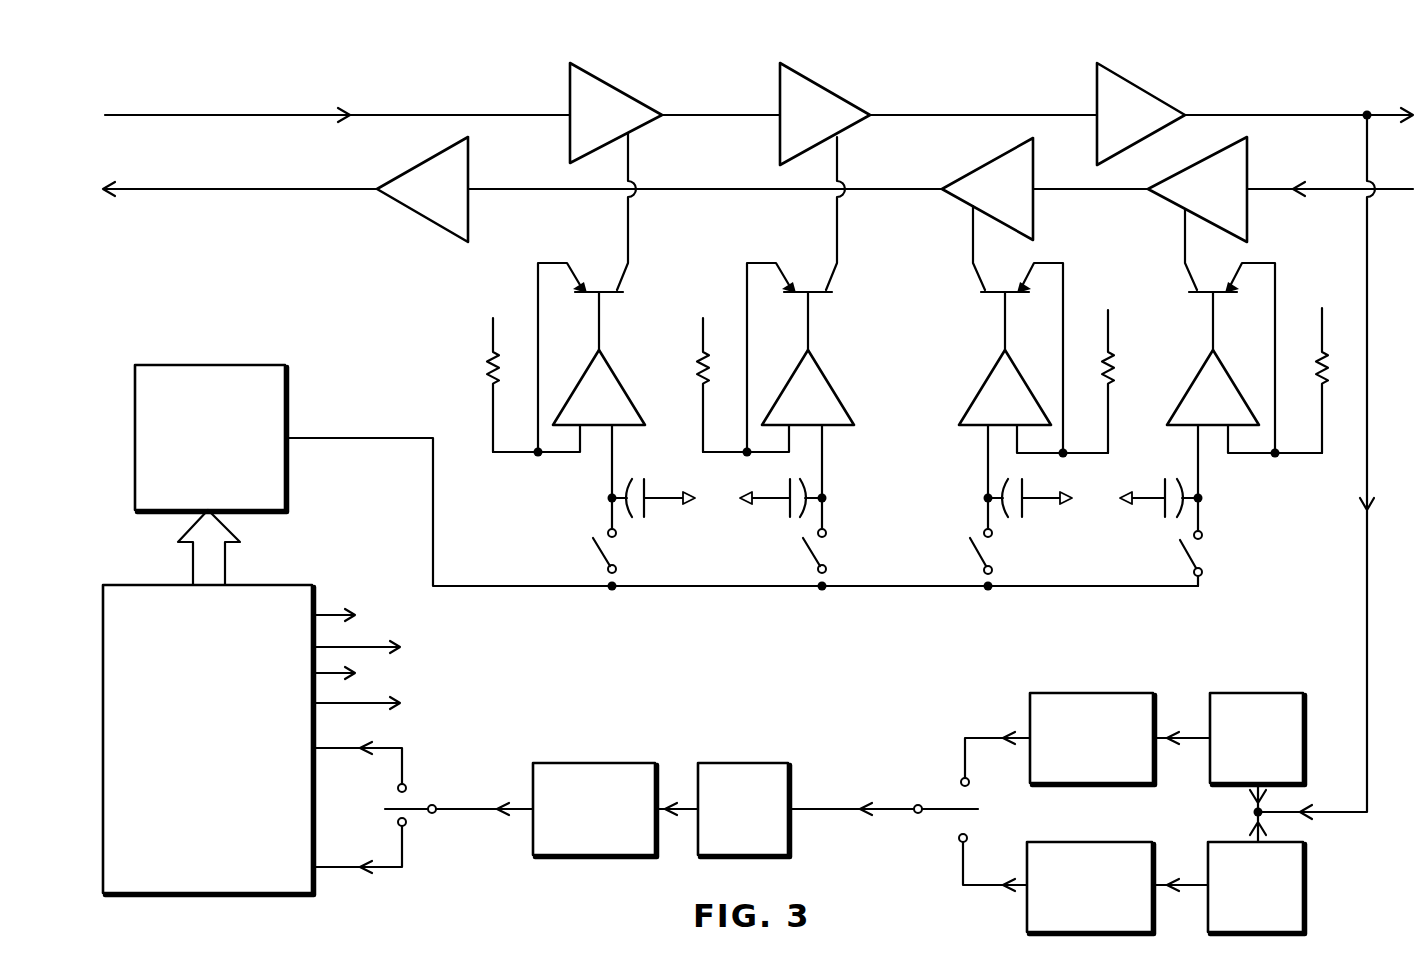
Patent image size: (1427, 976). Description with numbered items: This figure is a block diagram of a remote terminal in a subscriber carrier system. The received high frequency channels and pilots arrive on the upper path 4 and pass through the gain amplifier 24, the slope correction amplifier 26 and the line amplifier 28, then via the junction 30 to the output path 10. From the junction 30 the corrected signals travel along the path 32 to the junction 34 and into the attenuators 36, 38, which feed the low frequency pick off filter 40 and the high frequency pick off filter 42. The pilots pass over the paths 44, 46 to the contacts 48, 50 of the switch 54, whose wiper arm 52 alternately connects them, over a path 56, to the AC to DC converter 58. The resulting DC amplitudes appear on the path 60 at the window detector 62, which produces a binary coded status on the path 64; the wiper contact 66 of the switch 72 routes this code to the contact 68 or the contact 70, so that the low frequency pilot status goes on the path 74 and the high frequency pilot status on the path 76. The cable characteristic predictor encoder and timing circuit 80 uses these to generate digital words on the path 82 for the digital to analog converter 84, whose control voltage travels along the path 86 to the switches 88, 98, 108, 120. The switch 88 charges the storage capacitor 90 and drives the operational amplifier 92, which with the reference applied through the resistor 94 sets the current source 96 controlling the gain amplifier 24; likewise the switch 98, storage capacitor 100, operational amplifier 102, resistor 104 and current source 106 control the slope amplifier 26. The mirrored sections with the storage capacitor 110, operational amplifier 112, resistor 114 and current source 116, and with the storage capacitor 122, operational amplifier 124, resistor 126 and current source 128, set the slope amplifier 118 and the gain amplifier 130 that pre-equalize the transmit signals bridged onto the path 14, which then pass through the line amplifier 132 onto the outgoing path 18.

The first signal path 4 is at (252, 115).
The output path 10 is at (1392, 113).
The path 14 is at (1404, 191).
The second signal path 18 is at (252, 189).
The gain amplifier 24 is at (590, 72).
The slope correction amplifier 26 is at (800, 72).
The line amplifier 28 is at (1115, 72).
The junction 30 is at (1365, 113).
The path 32 is at (1372, 165).
The junction 34 is at (1253, 811).
The attenuator 36 is at (1230, 842).
The attenuator 38 is at (1275, 693).
The low frequency pick off filter 40 is at (1105, 842).
The high frequency pick off filter 42 is at (1090, 693).
The path 44 is at (968, 872).
The path 46 is at (968, 752).
The contact 48 is at (959, 836).
The contact 50 is at (962, 778).
The wiper arm 52 is at (958, 807).
The switch 54 is at (950, 822).
The line 56 is at (862, 808).
The AC to DC converter 58 is at (765, 763).
The path 60 is at (690, 805).
The window detector 62 is at (600, 763).
The path 64 is at (522, 805).
The wiper contact 66 is at (415, 813).
The contact 68 is at (396, 822).
The contact 70 is at (396, 790).
The switch 72 is at (410, 803).
The path 74 is at (385, 868).
The path 76 is at (380, 745).
The cable characteristic predictor encoder and timing circuit 80 is at (185, 585).
The path 82 is at (225, 560).
The digital to analog converter 84 is at (195, 365).
The path 86 is at (348, 438).
The switch 88 is at (592, 540).
The storage capacitor 90 is at (637, 478).
The operational amplifier 92 is at (613, 367).
The resistor 94 is at (487, 355).
The current source 96 is at (600, 280).
The switch 98 is at (803, 540).
The storage capacitor 100 is at (803, 480).
The operational amplifier 102 is at (828, 367).
The resistor 104 is at (697, 355).
The current source 106 is at (807, 278).
The switch 108 is at (970, 540).
The storage capacitor 110 is at (1010, 480).
The operational amplifier 112 is at (1020, 370).
The resistor 114 is at (1113, 365).
The current source 116 is at (1003, 280).
The slope amplifier 118 is at (995, 163).
The switch 120 is at (1180, 540).
The storage capacitor 122 is at (1182, 483).
The operational amplifier 124 is at (1233, 370).
The resistor 126 is at (1328, 377).
The current source 128 is at (1213, 280).
The gain amplifier 130 is at (1252, 163).
The line amplifier 132 is at (418, 165).